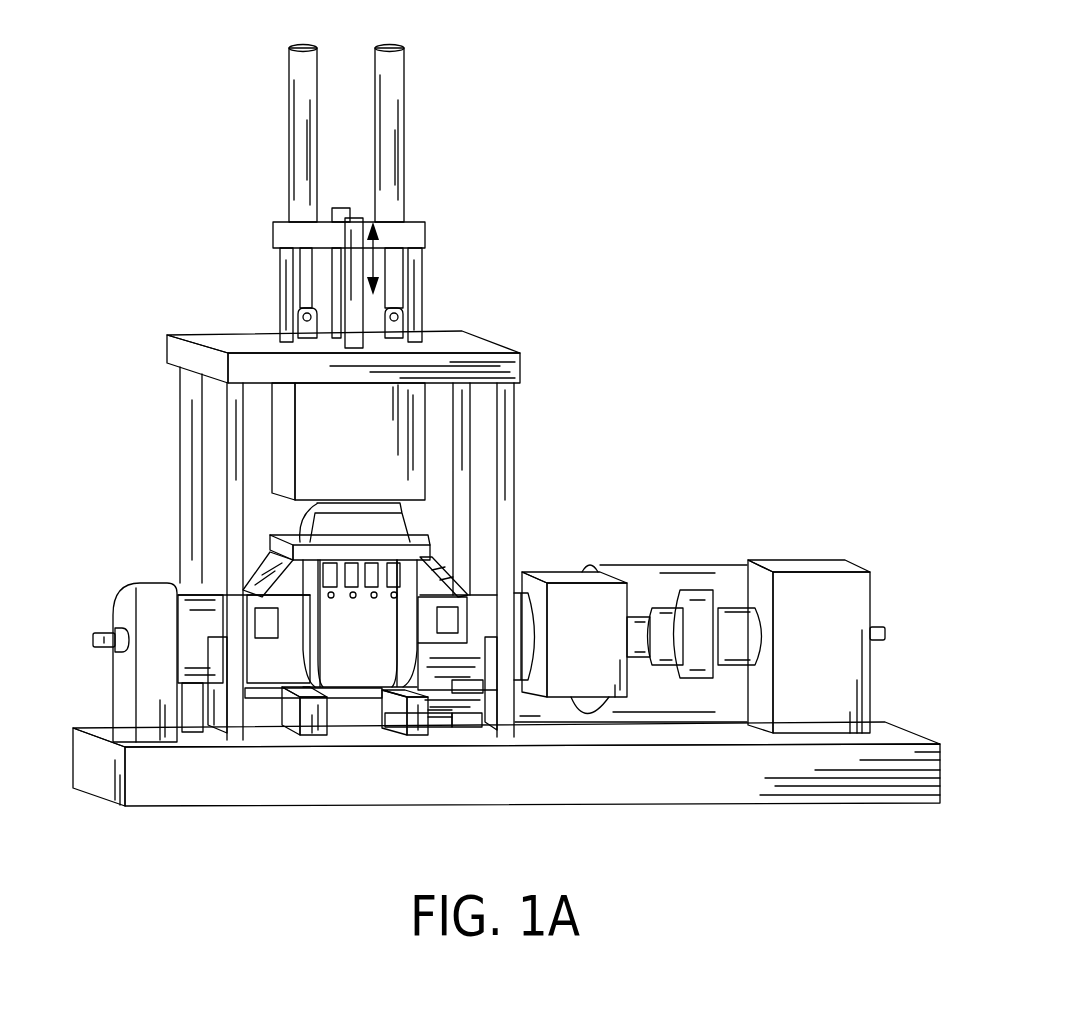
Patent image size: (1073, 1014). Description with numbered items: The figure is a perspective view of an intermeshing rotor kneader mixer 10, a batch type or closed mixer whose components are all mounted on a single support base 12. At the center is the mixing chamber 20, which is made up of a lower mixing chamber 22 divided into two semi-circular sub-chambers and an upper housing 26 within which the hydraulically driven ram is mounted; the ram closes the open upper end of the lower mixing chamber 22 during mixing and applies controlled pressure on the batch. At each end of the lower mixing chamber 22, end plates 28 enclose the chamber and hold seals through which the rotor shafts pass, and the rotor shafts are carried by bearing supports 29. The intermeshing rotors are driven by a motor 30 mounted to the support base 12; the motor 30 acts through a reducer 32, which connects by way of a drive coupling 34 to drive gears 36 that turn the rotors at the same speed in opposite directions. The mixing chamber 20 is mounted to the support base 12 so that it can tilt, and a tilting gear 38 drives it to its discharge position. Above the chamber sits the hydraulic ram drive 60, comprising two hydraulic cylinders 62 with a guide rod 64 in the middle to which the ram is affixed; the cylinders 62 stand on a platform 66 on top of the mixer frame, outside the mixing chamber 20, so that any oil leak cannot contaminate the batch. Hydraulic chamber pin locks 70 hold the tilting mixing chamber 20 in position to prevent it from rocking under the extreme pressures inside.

The kneader mixer 10 is at (706, 362).
The support base 12 is at (930, 770).
The mixing chamber 20 is at (423, 552).
The lower mixing chamber 22 is at (353, 677).
The upper housing 26 is at (440, 575).
The end plates 28 is at (288, 580).
The bearing supports 29 is at (490, 722).
The motor 30 is at (638, 669).
The reducer 32 is at (858, 589).
The drive coupling 34 is at (698, 682).
The drive gears 36 is at (607, 654).
The tilting gear 38 is at (171, 636).
The hydraulic ram drive 60 is at (484, 246).
The hydraulic cylinders 62 is at (305, 143).
The guide rod 64 is at (340, 263).
The platform 66 is at (512, 361).
The hydraulic chamber pin locks 70 is at (260, 710).